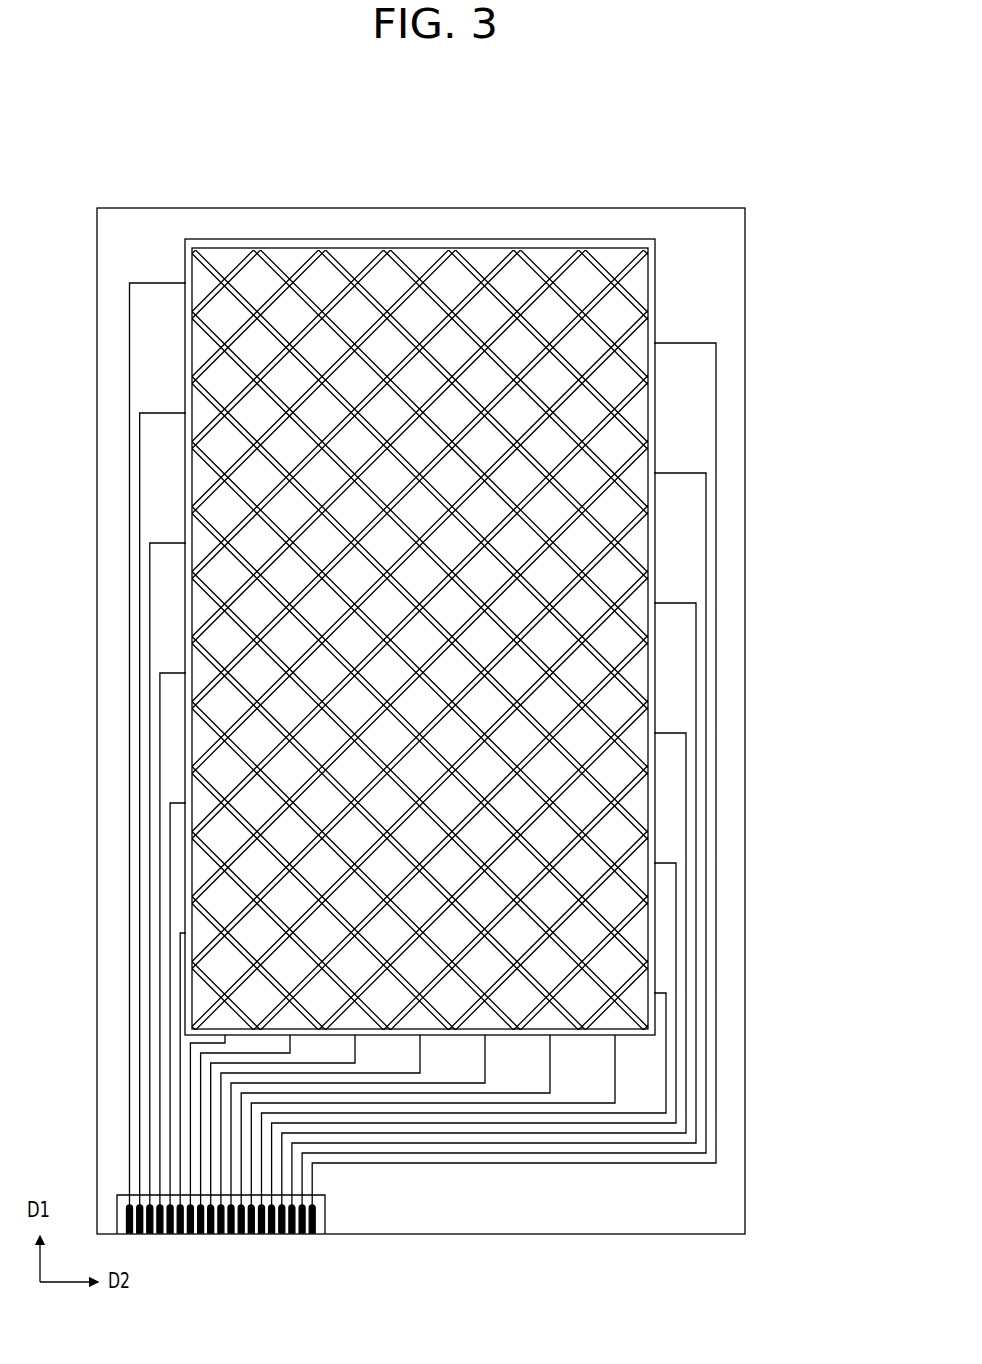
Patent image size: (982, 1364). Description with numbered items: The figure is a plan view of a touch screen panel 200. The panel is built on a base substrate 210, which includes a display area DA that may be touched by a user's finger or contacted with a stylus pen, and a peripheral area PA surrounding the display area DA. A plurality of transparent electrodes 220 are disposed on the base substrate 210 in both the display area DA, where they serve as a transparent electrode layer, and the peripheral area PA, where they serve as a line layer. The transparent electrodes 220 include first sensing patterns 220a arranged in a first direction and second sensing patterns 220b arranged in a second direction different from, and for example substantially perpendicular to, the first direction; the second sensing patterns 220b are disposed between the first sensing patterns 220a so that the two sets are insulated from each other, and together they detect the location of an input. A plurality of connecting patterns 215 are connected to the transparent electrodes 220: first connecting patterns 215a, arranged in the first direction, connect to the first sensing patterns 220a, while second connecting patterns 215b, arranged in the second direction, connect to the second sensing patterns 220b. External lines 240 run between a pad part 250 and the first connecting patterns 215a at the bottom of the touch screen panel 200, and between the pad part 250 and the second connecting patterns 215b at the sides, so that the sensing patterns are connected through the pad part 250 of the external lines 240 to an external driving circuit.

The touch screen panel 200 is at (437, 100).
The base substrate 210 is at (512, 208).
The display area DA is at (590, 238).
The peripheral area PA is at (688, 238).
The connecting patterns 215 is at (442, 154).
The first connecting patterns 215a is at (345, 275).
The second connecting patterns 215b is at (412, 268).
The transparent electrodes 220 is at (287, 154).
The first sensing patterns 220a is at (223, 302).
The second sensing patterns 220b is at (260, 265).
The external lines 240 is at (126, 373).
The pad part 250 is at (323, 1212).